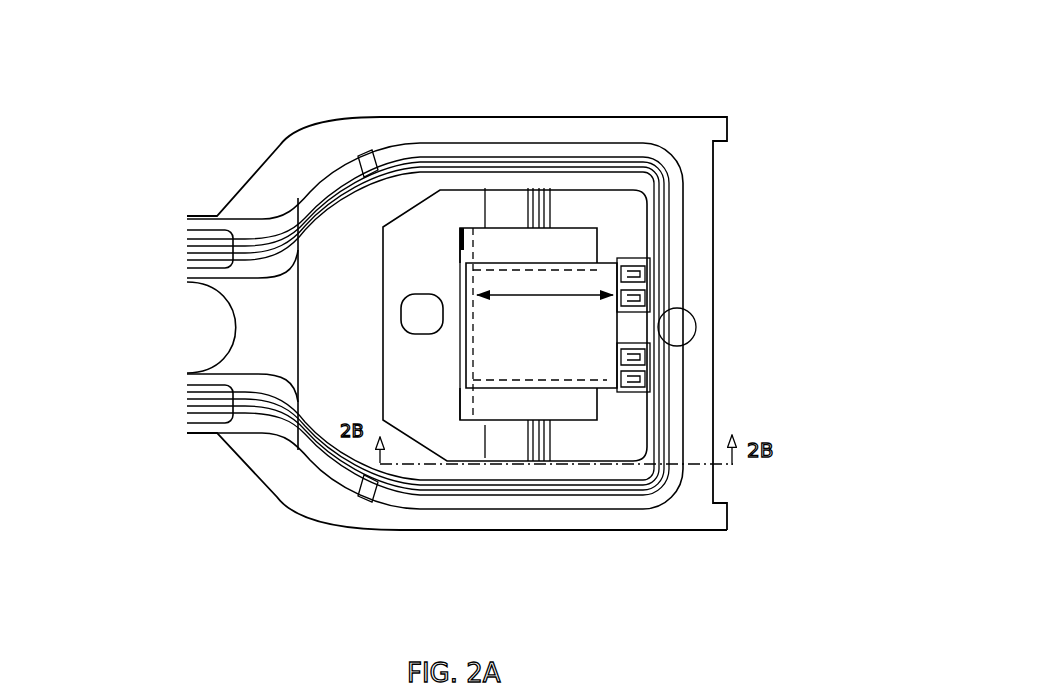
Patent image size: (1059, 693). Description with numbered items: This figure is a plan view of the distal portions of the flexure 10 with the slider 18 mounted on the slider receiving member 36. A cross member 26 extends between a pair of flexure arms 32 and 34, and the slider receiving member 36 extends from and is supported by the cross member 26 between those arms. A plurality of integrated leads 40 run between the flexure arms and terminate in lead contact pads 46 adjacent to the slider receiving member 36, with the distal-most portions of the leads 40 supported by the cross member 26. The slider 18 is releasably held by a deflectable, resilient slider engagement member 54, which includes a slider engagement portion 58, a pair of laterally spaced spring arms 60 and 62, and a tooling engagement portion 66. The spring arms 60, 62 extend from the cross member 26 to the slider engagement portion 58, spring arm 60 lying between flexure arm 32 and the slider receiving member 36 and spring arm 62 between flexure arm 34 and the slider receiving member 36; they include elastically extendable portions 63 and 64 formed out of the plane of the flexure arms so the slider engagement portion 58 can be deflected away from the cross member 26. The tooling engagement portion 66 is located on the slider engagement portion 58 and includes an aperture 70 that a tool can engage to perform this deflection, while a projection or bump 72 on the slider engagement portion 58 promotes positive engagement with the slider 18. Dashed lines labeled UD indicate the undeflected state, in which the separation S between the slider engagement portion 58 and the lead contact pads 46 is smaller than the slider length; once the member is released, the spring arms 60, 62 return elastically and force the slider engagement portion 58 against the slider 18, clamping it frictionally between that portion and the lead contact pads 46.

The flexure 10 is at (150, 108).
The slider 18 is at (553, 380).
The cross member 26 is at (713, 217).
The flexure arm 32 is at (533, 532).
The flexure arm 34 is at (463, 117).
The slider receiving member 36 is at (544, 262).
The integrated leads 40 is at (670, 160).
The lead contact pads 46 is at (650, 378).
The slider engagement member 54 is at (437, 190).
The slider engagement portion 58 is at (450, 398).
The spring arm 60 is at (594, 444).
The spring arm 62 is at (587, 190).
The elastically extendable portion 63 is at (507, 453).
The elastically extendable portion 64 is at (513, 195).
The tooling engagement portion 66 is at (383, 353).
The aperture 70 is at (408, 320).
The projection or bump 72 is at (458, 316).
The separation S is at (545, 310).
The undeflected state UD is at (458, 316).